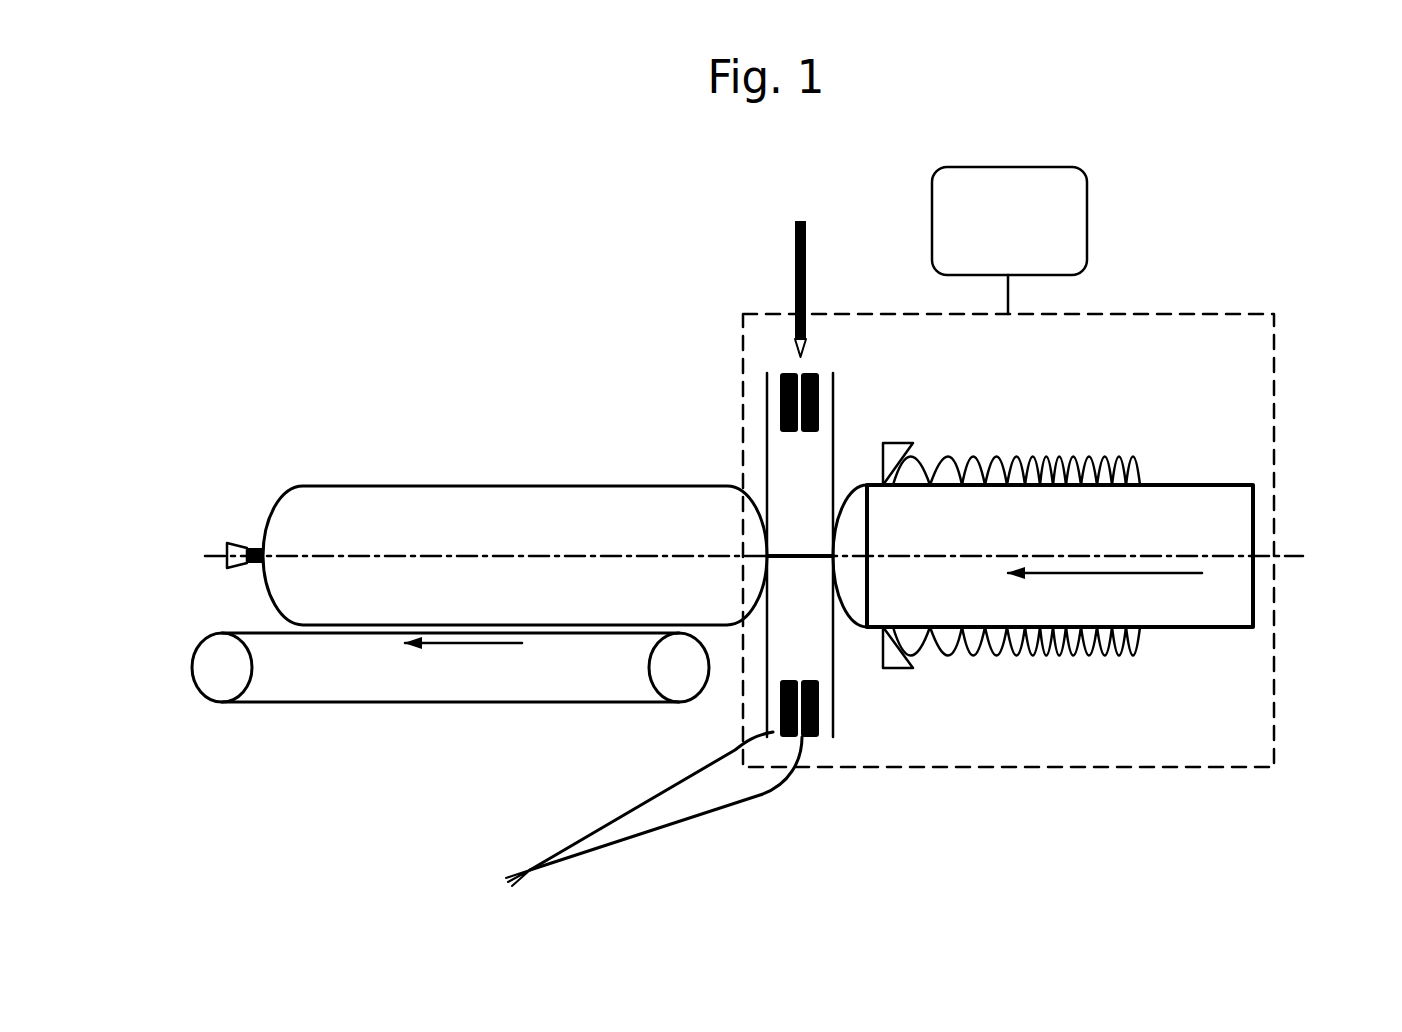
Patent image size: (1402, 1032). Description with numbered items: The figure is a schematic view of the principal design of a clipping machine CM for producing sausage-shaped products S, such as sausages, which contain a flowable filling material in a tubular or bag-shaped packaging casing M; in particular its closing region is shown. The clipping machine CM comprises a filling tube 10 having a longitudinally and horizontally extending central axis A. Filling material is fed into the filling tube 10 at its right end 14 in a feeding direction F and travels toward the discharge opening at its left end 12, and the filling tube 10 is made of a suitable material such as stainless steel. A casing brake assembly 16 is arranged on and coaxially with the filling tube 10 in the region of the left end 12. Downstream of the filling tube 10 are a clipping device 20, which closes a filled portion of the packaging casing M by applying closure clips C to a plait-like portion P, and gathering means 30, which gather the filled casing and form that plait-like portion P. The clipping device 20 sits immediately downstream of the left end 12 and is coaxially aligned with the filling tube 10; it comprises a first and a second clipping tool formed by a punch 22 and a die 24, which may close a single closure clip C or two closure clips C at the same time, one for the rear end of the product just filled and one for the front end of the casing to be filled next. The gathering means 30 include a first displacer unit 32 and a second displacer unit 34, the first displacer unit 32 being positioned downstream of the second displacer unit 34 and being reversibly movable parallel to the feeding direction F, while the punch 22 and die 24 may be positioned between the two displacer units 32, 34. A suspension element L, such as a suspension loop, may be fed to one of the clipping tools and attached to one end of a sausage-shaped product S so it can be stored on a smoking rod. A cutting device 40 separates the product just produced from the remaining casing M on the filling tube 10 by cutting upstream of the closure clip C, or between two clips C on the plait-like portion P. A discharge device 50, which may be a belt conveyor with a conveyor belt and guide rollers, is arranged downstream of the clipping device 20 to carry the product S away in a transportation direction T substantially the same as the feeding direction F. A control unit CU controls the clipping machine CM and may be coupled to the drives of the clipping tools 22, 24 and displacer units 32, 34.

The filling tube 10 is at (1180, 485).
The left end of filling tube 12 is at (872, 585).
The right end of filling tube 14 is at (1253, 515).
The casing brake assembly 16 is at (913, 443).
The clipping device 20 is at (759, 550).
The punch 22 is at (820, 400).
The die 24 is at (780, 715).
The gathering means 30 is at (934, 795).
The first displacer unit 32 is at (833, 645).
The second displacer unit 34 is at (767, 622).
The cutting device 40 is at (766, 254).
The discharge device 50 is at (450, 716).
The central axis A is at (1303, 558).
The closure clip C is at (245, 543).
The sausage-shaped product S is at (498, 485).
The transportation direction T is at (463, 662).
The feeding direction F is at (1105, 592).
The tubular packaging casing M is at (1087, 460).
The suspension element L is at (728, 805).
The plait-like portion P is at (798, 553).
The control unit CU is at (1009, 240).
The clipping machine CM is at (1234, 303).